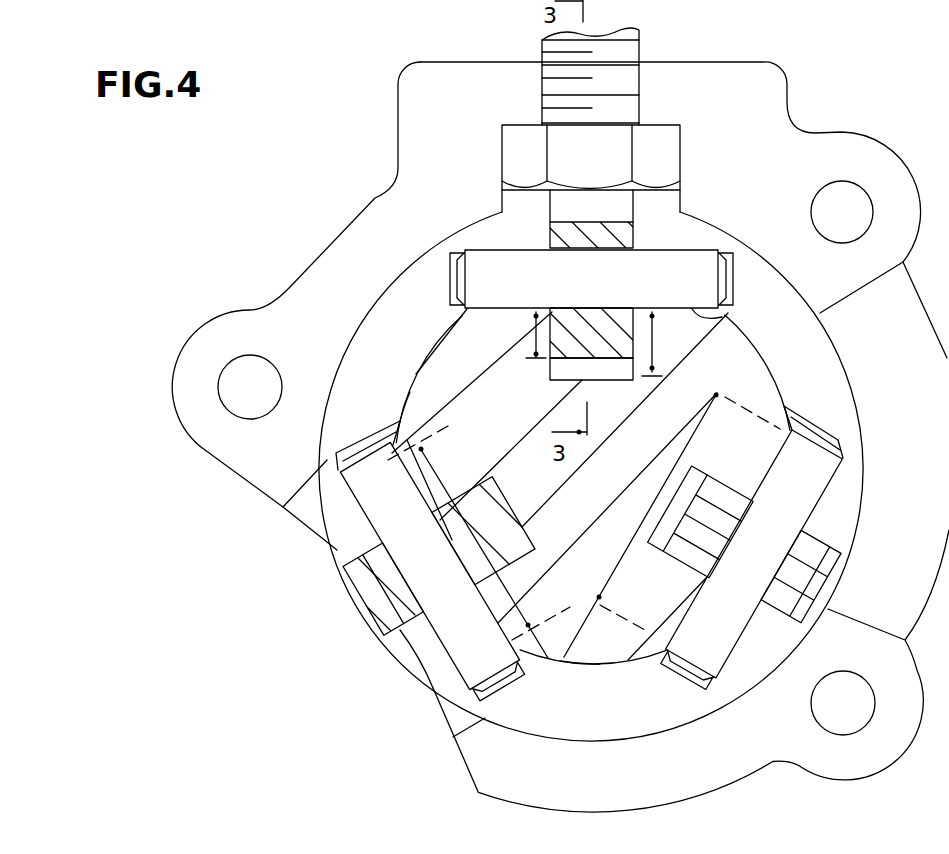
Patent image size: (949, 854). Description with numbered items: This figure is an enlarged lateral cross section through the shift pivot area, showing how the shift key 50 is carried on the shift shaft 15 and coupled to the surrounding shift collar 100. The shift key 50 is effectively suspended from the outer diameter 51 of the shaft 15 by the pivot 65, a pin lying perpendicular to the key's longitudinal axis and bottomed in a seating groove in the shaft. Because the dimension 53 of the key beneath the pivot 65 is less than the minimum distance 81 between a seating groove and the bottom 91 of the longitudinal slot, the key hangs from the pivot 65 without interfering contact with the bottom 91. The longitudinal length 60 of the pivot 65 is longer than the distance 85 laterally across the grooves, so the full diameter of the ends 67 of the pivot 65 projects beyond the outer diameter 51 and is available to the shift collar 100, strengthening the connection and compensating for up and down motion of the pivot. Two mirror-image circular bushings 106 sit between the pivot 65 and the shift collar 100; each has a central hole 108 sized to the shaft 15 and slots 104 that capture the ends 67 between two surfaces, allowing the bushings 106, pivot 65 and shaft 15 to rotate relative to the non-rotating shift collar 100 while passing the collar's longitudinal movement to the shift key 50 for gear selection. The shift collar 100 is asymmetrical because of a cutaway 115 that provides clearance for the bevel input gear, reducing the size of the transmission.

The shift collar 100 is at (705, 99).
The slots in the bushing 104 is at (543, 241).
The shift key 50 is at (625, 236).
The pivot 65 is at (660, 282).
The outer diameter of the shaft 51 is at (732, 317).
The dimension beneath the pivot 53 is at (536, 332).
The shift shaft 15 is at (763, 377).
The minimum distance between seating groove and slot bottom 81 is at (652, 343).
The bottom of the longitudinal slot 91 is at (583, 381).
The distance laterally across the grooves 85 is at (440, 480).
The longitudinal length of the pivot 60 is at (628, 542).
The ends of the pivot 67 is at (448, 630).
The central hole 108 is at (577, 663).
The cutaway 115 is at (400, 731).
The circular bushings 106 is at (400, 360).